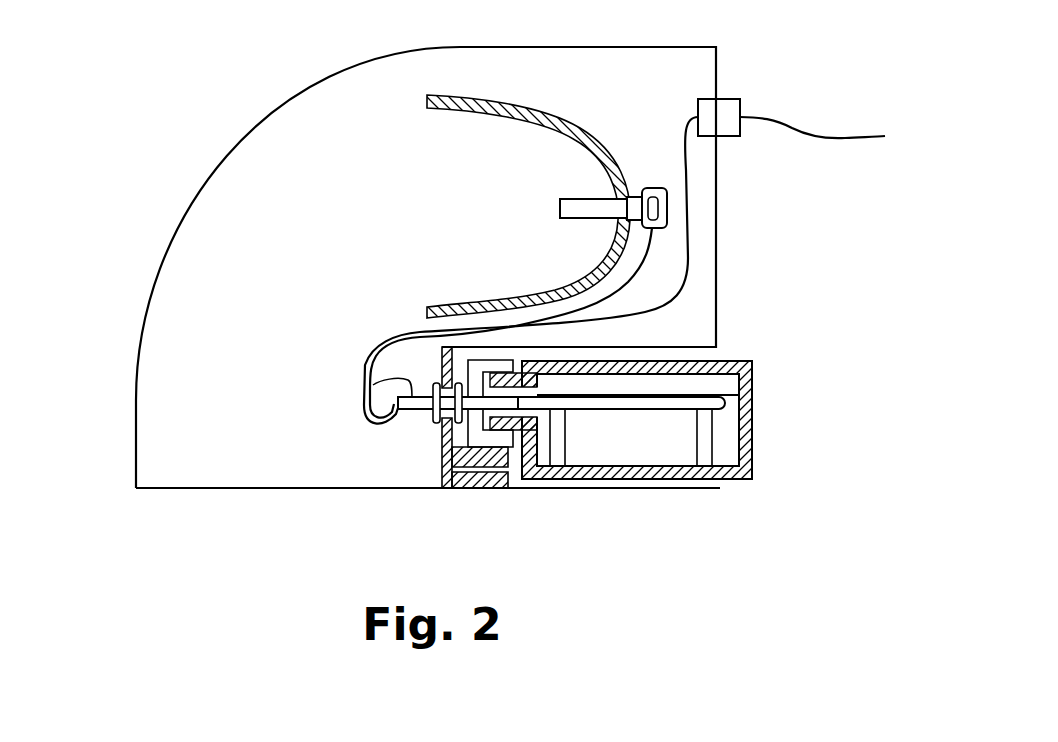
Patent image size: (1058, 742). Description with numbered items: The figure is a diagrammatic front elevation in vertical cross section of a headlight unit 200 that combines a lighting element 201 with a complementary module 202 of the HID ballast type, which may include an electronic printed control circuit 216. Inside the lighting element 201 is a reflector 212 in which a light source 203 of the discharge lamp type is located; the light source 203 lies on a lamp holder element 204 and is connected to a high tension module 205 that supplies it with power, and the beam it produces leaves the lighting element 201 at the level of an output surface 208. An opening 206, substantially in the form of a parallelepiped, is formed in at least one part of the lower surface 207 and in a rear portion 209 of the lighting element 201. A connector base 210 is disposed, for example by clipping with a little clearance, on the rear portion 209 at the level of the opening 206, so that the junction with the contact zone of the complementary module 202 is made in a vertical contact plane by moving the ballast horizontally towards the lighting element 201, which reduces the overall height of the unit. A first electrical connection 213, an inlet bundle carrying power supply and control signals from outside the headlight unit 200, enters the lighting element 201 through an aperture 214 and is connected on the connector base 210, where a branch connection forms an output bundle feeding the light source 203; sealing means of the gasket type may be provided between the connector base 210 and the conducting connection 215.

The headlight unit 200 is at (838, 98).
The lighting element 201 is at (155, 458).
The complementary module 202 is at (717, 385).
The light source 203 is at (573, 208).
The lamp holder element 204 is at (620, 197).
The high tension module 205 is at (651, 190).
The opening 206 is at (445, 513).
The lower surface 207 is at (313, 490).
The output surface 208 is at (716, 237).
The rear portion 209 is at (443, 469).
The connector base 210 is at (364, 386).
The reflector 212 is at (482, 103).
The first electrical connection 213 is at (830, 140).
The aperture 214 is at (732, 96).
The conducting connection 215 is at (370, 358).
The electronic printed control circuit 216 is at (675, 402).